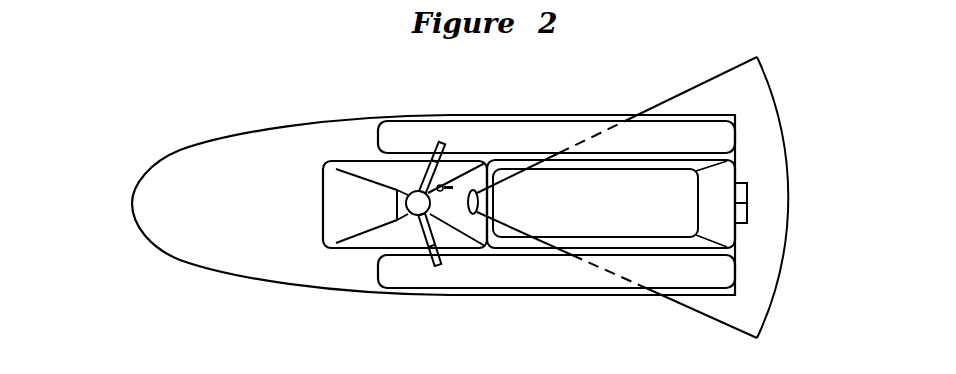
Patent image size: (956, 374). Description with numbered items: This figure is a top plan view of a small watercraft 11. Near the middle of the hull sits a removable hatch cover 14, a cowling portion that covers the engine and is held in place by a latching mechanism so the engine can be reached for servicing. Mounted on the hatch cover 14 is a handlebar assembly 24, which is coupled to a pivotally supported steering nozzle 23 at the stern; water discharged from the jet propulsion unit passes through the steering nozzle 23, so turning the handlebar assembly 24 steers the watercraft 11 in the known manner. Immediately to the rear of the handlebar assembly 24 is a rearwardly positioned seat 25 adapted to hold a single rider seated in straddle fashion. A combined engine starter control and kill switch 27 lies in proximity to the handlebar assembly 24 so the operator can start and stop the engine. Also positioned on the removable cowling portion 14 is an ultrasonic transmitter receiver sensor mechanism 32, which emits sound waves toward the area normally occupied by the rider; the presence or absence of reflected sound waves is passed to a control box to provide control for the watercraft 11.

The small watercraft 11 is at (298, 291).
The removable hatch cover 14 is at (362, 168).
The steering nozzle 23 is at (741, 224).
The handlebar assembly 24 is at (433, 150).
The seat 25 is at (722, 183).
The combined engine starter control and kill switch 27 is at (451, 183).
The ultrasonic transmitter receiver sensor mechanism 32 is at (471, 205).